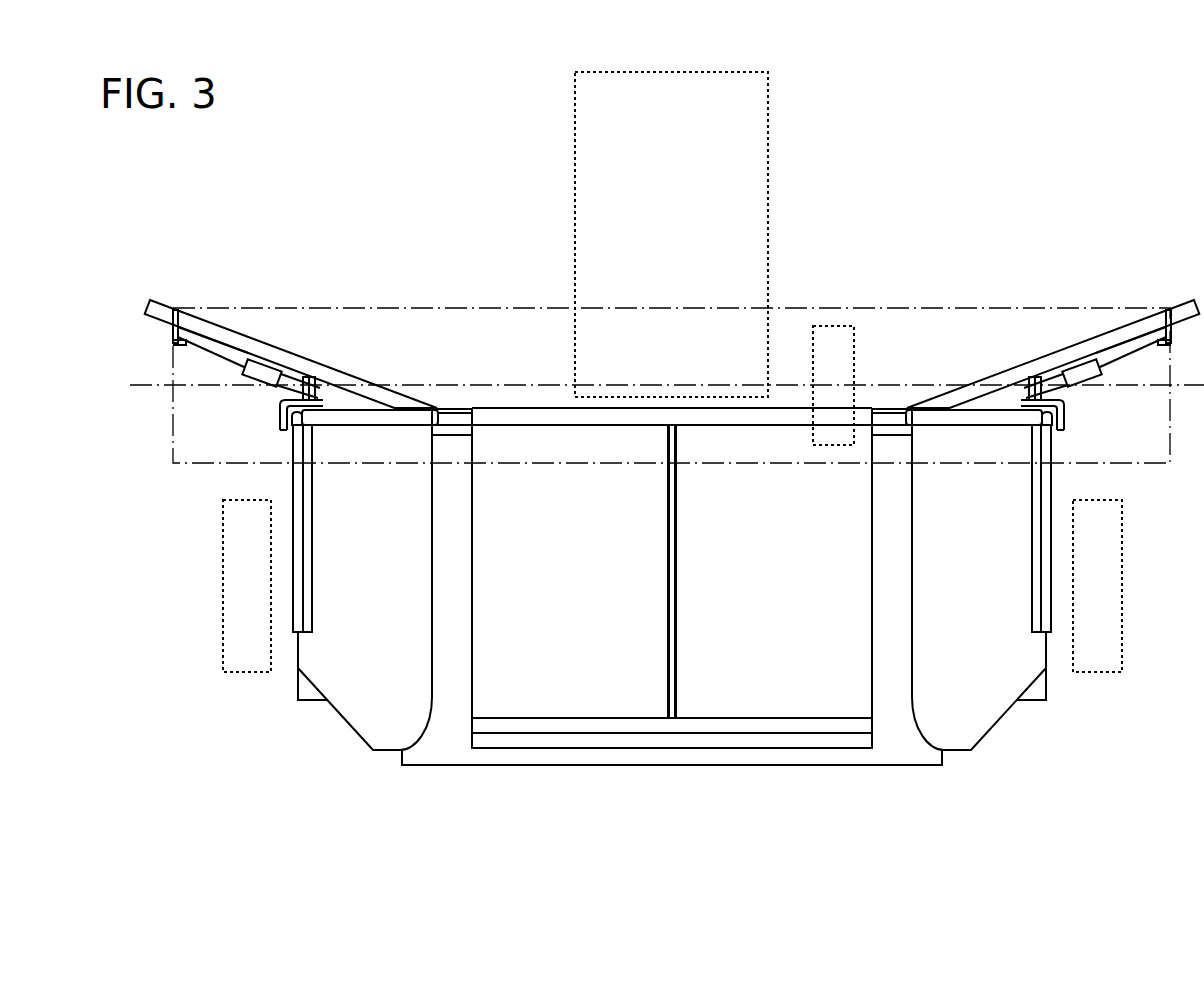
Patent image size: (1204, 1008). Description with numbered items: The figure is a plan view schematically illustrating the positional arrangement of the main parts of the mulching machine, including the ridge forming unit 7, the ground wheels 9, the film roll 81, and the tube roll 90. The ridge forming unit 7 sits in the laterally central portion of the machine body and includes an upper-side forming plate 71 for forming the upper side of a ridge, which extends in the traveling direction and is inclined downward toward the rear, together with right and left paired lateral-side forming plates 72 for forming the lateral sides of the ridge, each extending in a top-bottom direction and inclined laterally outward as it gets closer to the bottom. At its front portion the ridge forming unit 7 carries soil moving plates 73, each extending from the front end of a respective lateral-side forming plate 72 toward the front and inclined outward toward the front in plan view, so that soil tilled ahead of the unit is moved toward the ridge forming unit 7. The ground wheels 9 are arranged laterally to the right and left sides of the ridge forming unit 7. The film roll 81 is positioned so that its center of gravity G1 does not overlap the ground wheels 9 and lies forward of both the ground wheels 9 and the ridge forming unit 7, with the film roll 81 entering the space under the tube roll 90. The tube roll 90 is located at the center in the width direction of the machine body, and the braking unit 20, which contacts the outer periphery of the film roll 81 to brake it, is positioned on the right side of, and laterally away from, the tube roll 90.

The ridge forming unit 7 is at (350, 762).
The ground wheels 9 is at (237, 602).
The braking unit 20 is at (832, 338).
The upper-side forming plate 71 is at (448, 740).
The lateral-side forming plates 72 is at (358, 698).
The soil moving plates 73 is at (302, 360).
The film roll 81 is at (908, 338).
The tube roll 90 is at (752, 150).
The center of gravity of the film roll G1 is at (647, 385).